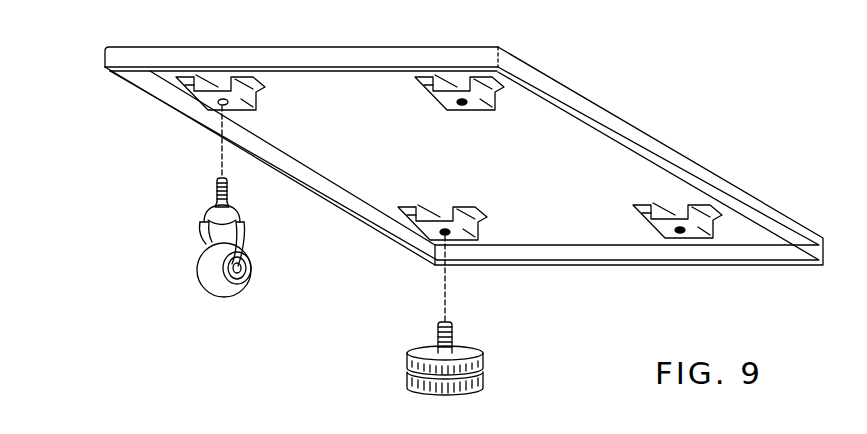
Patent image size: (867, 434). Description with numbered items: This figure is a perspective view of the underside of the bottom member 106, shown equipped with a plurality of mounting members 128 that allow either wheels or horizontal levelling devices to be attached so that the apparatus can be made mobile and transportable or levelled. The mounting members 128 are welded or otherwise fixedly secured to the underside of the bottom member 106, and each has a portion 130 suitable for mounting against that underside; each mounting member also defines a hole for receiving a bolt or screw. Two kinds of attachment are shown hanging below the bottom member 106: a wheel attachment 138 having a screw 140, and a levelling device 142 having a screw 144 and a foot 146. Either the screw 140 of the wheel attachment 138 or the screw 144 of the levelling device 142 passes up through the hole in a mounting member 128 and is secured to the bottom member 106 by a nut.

The bottom member 106 is at (666, 137).
The mounting members 128 is at (190, 84).
The portion 130 is at (518, 95).
The wheel attachment 138 is at (199, 284).
The screw 140 is at (214, 198).
The levelling device 142 is at (461, 351).
The screw 144 is at (453, 335).
The foot 146 is at (405, 370).